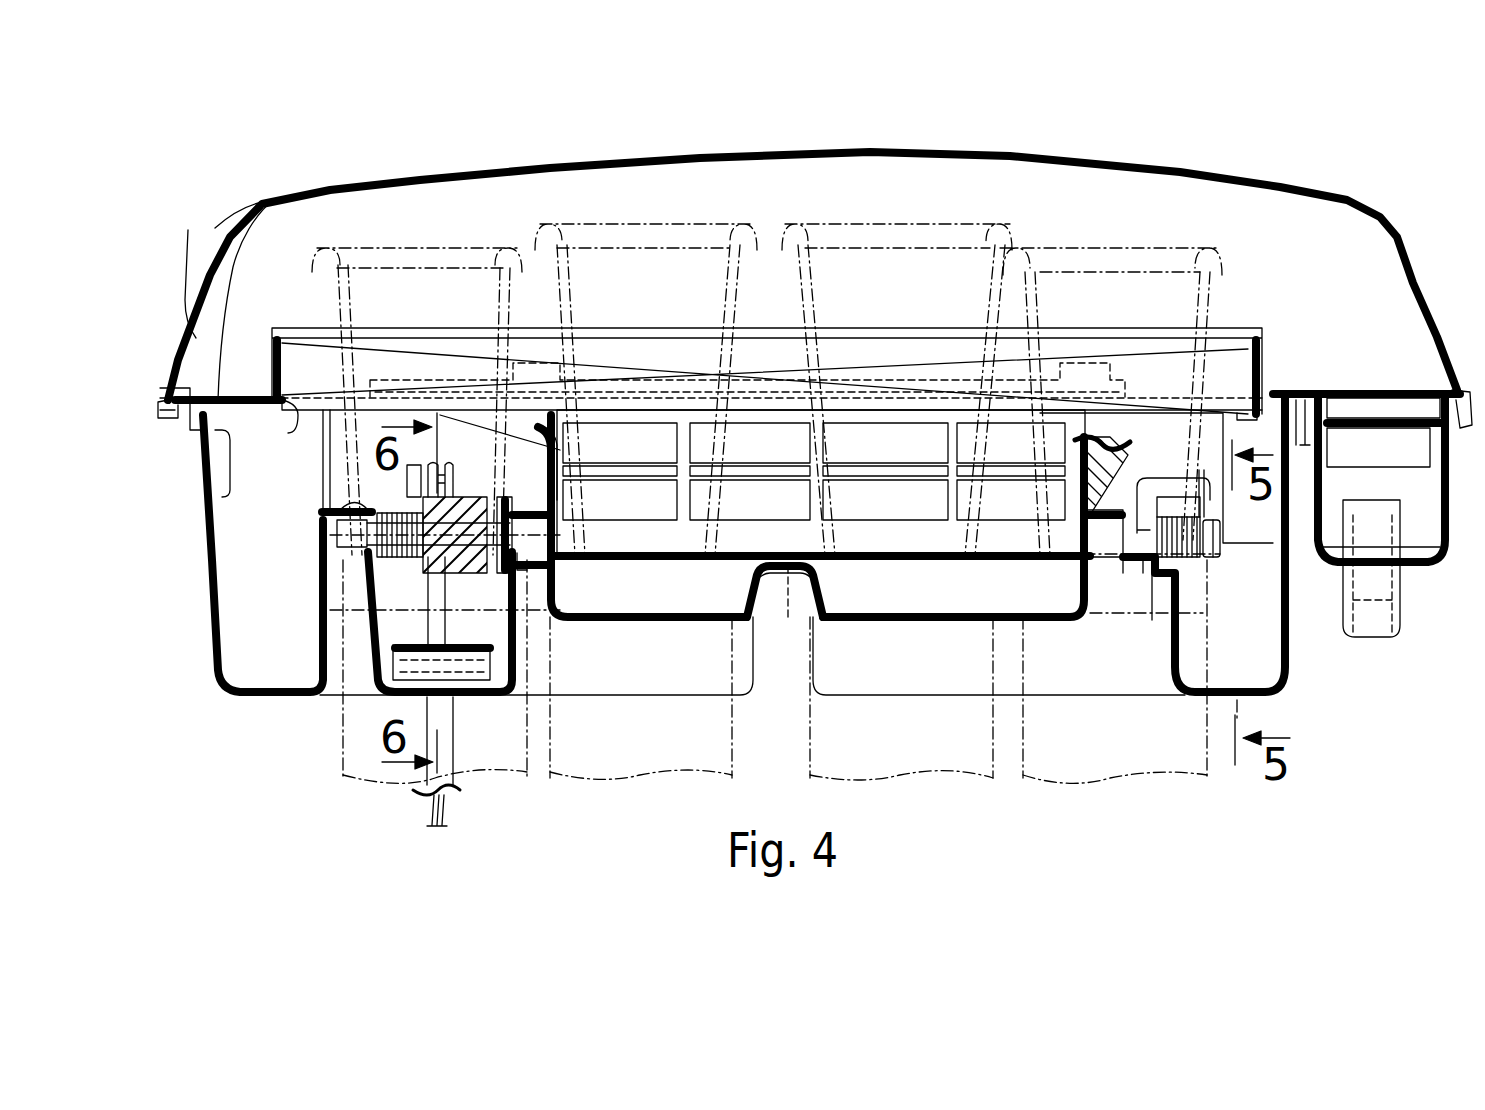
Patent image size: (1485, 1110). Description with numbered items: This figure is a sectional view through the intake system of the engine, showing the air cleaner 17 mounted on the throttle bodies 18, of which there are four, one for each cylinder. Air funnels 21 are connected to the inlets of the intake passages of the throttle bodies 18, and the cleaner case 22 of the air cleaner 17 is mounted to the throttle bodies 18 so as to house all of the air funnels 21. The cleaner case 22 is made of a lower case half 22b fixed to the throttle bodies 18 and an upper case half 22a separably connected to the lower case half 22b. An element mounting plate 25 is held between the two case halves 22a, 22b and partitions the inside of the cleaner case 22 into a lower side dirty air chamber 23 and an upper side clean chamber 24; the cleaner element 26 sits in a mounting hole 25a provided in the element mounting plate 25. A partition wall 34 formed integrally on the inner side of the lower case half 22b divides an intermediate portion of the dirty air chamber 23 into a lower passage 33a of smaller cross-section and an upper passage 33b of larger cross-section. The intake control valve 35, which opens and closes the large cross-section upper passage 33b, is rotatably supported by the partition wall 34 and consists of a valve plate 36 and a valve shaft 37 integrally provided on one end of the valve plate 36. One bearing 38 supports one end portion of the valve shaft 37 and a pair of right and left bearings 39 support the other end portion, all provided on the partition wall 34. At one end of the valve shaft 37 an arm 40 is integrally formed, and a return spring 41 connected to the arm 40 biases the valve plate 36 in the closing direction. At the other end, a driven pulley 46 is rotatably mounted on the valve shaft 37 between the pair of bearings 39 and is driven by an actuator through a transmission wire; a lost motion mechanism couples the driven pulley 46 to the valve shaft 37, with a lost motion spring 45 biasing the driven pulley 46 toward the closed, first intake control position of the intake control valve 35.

The air cleaner 17 is at (1144, 163).
The throttle body 18 is at (497, 778).
The air funnel 21 is at (423, 248).
The cleaner case 22 is at (298, 142).
The upper case half 22a is at (186, 230).
The lower case half 22b is at (250, 215).
The dirty air chamber 23 is at (290, 532).
The clean chamber 24 is at (290, 300).
The element mounting plate 25 is at (283, 400).
The mounting hole 25a is at (295, 430).
The cleaner element 26 is at (445, 350).
The lower passage 33a is at (900, 600).
The upper passage 33b is at (1078, 435).
The partition wall 34 is at (1083, 517).
The intake control valve 35 is at (860, 440).
The valve plate 36 is at (757, 440).
The valve shaft 37 is at (1107, 540).
The bearing 38 is at (1113, 499).
The bearings 39 is at (335, 555).
The arm 40 is at (1150, 490).
The return spring 41 is at (1187, 557).
The lost motion spring 45 is at (402, 558).
The driven pulley 46 is at (463, 560).